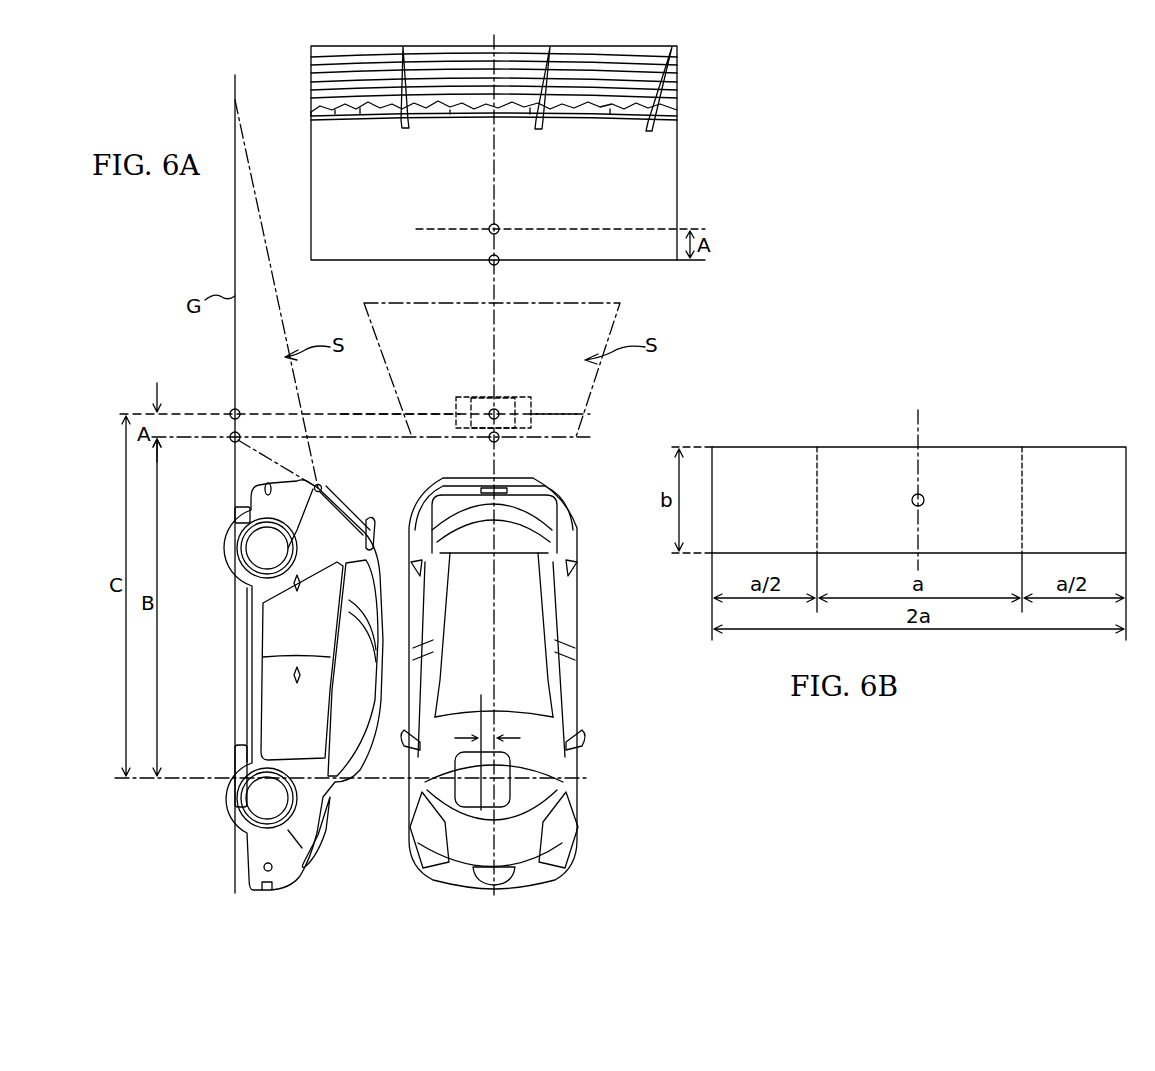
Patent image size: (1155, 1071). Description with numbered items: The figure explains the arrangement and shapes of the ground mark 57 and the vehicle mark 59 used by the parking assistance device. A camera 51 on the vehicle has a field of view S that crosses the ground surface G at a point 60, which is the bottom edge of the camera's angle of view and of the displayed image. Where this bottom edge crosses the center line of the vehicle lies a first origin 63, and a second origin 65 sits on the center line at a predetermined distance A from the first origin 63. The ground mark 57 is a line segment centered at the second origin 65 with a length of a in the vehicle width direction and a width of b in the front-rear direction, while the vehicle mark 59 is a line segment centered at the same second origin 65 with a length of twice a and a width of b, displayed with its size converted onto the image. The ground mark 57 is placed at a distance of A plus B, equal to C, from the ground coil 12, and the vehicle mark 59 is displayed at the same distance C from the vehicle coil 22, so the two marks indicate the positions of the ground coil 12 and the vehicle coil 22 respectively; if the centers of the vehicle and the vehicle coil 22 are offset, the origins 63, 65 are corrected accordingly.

In FIG. 6A, the ground coil 12 is at (235, 800).
In FIG. 6A, the vehicle coil 22 is at (545, 770).
In FIG. 6A, the camera 51 is at (322, 487).
In FIG. 6A, the ground mark 57 is at (471, 410).
In FIG. 6B, the ground mark 57 is at (1022, 478).
In FIG. 6A, the vehicle mark 59 is at (531, 412).
In FIG. 6B, the vehicle mark 59 is at (1085, 447).
In FIG. 6A, the point 60 is at (230, 441).
In FIG. 6A, the first origin 63 is at (499, 258).
In FIG. 6A, the second origin 65 is at (498, 225).
In FIG. 6B, the second origin 65 is at (924, 496).